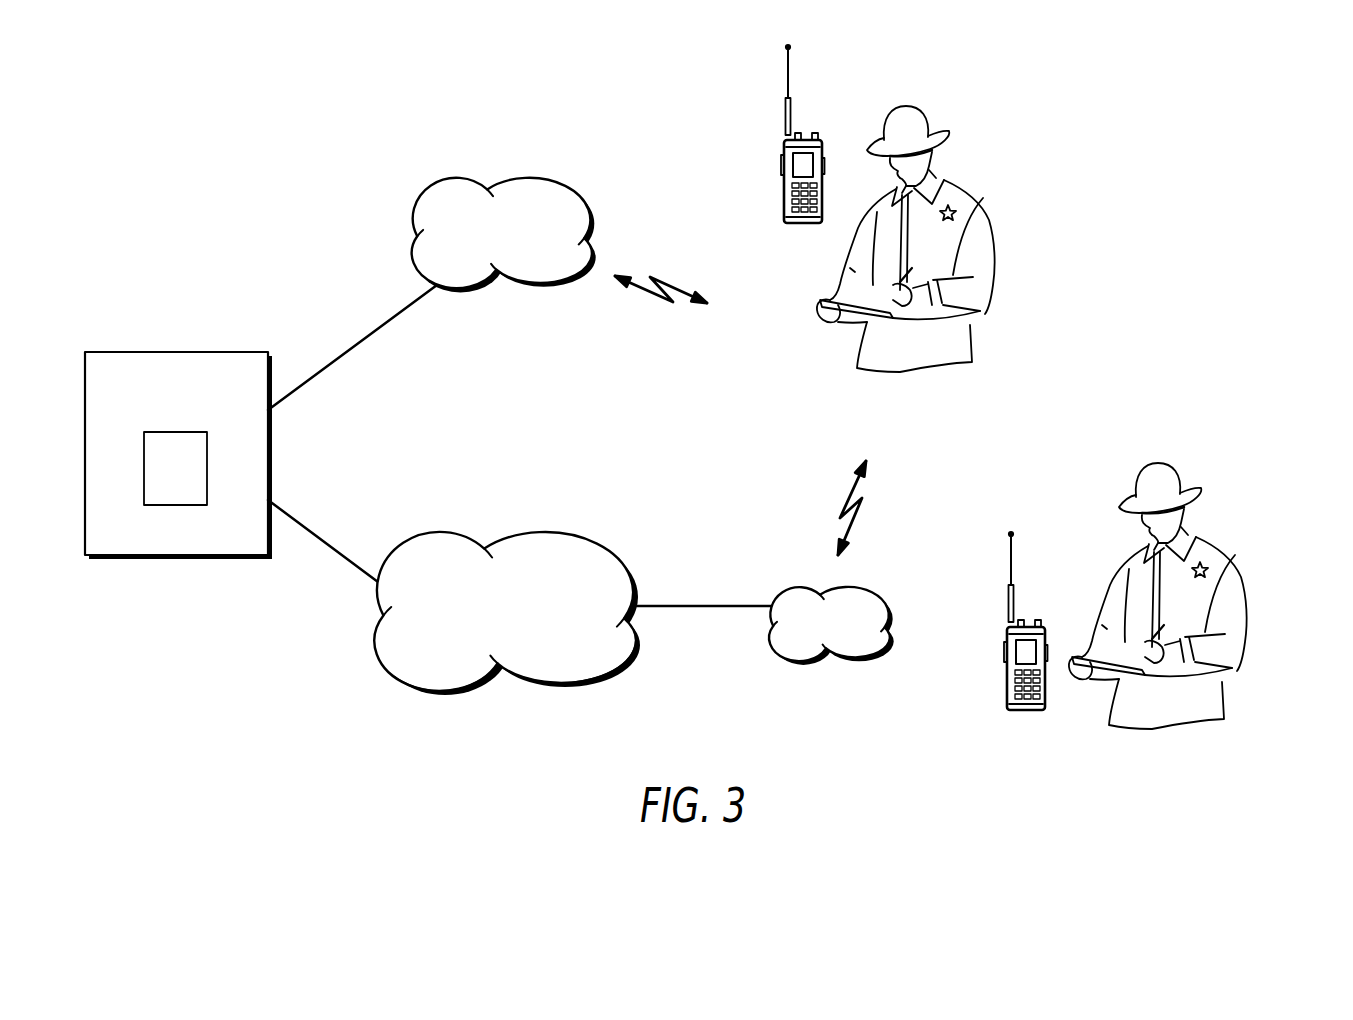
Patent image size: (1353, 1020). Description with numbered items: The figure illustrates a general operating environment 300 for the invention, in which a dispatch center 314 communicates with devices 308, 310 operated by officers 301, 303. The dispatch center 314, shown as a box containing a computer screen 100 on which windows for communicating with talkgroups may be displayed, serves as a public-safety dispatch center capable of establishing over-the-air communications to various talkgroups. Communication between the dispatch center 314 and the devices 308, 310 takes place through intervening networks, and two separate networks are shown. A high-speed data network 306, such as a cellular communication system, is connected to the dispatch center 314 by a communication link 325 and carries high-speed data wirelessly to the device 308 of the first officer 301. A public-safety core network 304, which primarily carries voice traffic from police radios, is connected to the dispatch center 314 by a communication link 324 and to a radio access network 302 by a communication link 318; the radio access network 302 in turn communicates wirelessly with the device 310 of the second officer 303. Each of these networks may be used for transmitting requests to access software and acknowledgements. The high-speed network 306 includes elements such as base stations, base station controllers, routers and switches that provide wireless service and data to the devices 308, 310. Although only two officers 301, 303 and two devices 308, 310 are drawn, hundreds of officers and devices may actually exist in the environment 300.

The general operating environment 300 is at (152, 144).
The dispatch center 314 is at (178, 352).
The computer screen 100 is at (180, 432).
The high-speed data network 306 is at (440, 180).
The public-safety core network 304 is at (546, 530).
The radio access network 302 is at (857, 586).
The communication link 325 is at (360, 341).
The communication link 324 is at (320, 535).
The communication link 318 is at (694, 606).
The device 308 is at (785, 143).
The device 310 is at (1007, 630).
The officer 301 is at (993, 238).
The officer 303 is at (1247, 597).